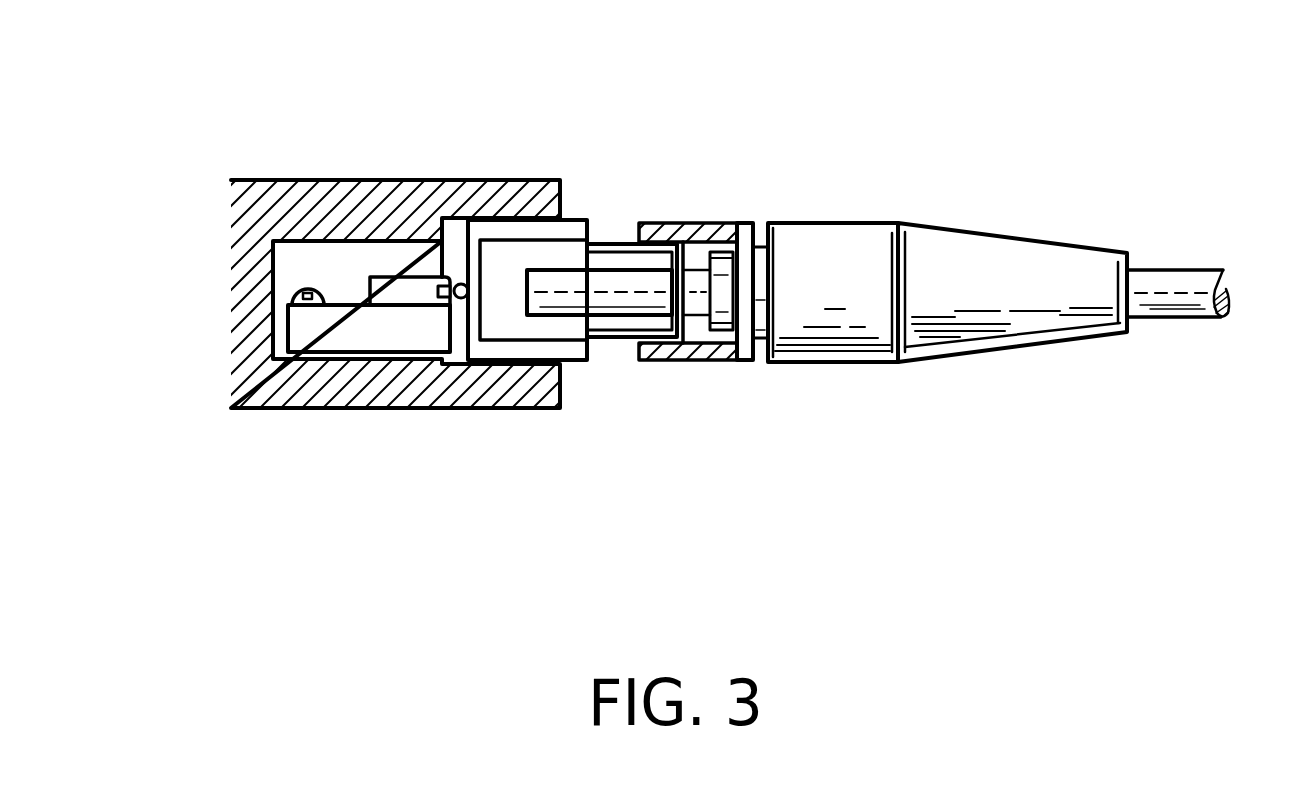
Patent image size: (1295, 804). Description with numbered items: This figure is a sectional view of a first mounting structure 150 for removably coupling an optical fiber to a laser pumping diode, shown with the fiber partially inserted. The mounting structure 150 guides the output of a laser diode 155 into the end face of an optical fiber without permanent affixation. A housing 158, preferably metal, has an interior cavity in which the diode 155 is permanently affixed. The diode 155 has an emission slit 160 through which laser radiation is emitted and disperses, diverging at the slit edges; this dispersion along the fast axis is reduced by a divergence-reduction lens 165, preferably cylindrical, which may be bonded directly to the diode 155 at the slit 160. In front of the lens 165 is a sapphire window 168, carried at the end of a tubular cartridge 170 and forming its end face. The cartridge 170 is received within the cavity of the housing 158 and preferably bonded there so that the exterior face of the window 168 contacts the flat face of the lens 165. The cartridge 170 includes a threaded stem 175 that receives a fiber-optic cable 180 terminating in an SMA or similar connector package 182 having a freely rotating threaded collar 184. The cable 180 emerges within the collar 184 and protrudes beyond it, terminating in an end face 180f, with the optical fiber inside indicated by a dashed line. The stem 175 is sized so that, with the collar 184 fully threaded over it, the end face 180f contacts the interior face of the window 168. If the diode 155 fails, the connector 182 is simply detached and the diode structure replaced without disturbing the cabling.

The mounting structure 150 is at (337, 90).
The laser diode 155 is at (320, 342).
The housing 158 is at (231, 243).
The emission slit 160 is at (437, 288).
The divergence-reduction lens 165 is at (459, 300).
The sapphire window 168 is at (483, 323).
The tubular cartridge 170 is at (563, 232).
The threaded stem 175 is at (615, 338).
The fiber-optic cable 180 is at (1176, 214).
The end face 180f is at (527, 290).
The connector package 182 is at (868, 222).
The threaded collar 184 is at (708, 222).